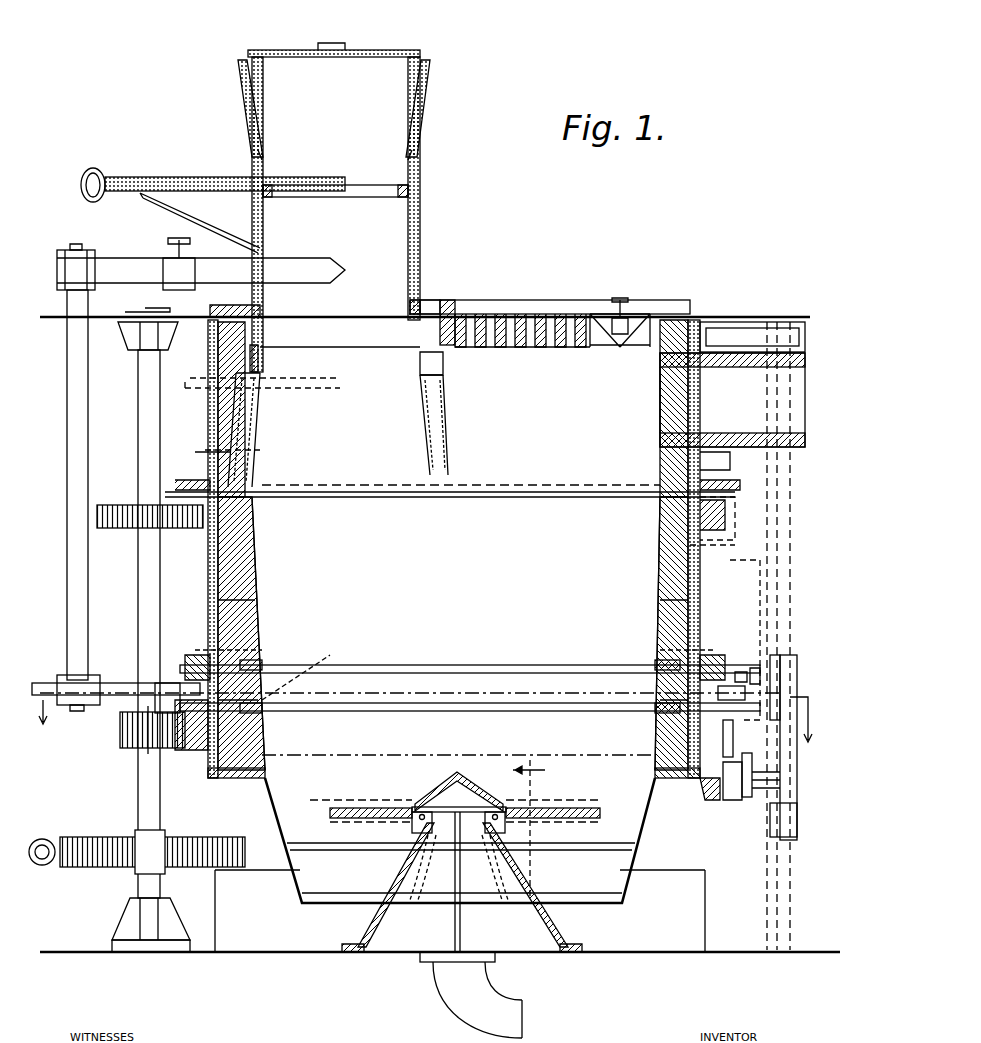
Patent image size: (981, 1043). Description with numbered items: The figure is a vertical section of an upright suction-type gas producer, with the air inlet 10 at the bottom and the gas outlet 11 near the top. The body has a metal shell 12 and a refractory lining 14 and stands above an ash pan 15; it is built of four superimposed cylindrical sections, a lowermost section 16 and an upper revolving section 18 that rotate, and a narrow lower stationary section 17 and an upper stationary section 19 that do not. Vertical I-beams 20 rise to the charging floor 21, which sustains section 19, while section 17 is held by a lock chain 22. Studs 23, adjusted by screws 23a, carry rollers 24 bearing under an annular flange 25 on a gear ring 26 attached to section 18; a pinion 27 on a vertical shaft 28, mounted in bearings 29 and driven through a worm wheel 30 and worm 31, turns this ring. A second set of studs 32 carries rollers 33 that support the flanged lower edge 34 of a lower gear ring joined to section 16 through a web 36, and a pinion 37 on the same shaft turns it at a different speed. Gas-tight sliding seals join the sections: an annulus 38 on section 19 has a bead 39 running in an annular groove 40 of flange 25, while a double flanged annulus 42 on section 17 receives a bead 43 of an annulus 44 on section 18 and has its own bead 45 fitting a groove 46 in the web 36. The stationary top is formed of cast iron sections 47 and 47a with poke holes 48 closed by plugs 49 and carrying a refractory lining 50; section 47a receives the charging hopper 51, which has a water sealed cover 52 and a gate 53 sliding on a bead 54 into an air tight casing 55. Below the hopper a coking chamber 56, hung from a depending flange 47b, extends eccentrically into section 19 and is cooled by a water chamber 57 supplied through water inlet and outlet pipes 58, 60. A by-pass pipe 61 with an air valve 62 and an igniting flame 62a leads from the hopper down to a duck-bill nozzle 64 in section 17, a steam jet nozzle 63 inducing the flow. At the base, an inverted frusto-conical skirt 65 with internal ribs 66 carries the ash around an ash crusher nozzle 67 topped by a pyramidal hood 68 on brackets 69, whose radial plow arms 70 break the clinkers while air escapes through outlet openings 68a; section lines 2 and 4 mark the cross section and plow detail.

The section line 2— 2 is at (422, 731).
The section line 4— 4 is at (532, 815).
The air inlet 10 is at (471, 995).
The gas outlet 11 is at (732, 400).
The metal shell 12 is at (210, 577).
The refractory lining 14 is at (265, 560).
The ash pan 15 is at (460, 911).
The lowermost section 16 is at (458, 739).
The lower stationary section 17 is at (410, 688).
The upper revolving section 18 is at (461, 620).
The upper stationary section 19 is at (545, 415).
The vertical I-beams 20 is at (790, 655).
The charging floor 21 is at (732, 322).
The lock chain 22 is at (748, 672).
The studs 23 is at (745, 640).
The screws 23a is at (715, 475).
The rollers 24 is at (660, 548).
The annular flange 25 is at (715, 488).
The gear ring 26 is at (660, 522).
The pinion 27 is at (122, 530).
The vertical shaft 28 is at (138, 585).
The bearings 29 is at (136, 352).
The worm wheel 30 is at (95, 868).
The worm 31 is at (42, 838).
The studs 32 is at (760, 812).
The rollers 33 is at (725, 785).
The flanged lower edge 34 is at (700, 790).
The web 36 is at (212, 778).
The pinion 37 is at (125, 735).
The annulus 38 is at (660, 470).
The bead 39 is at (725, 420).
The annular groove 40 is at (252, 514).
The double flanged annulus 42 is at (262, 665).
The bead 43 is at (192, 655).
The annulus 44 is at (210, 650).
The bead 45 is at (290, 718).
The groove 46 is at (160, 683).
The top sections 47 is at (548, 302).
The top section 47a is at (438, 302).
The depending flange 47b is at (410, 335).
The poke holes 48 is at (620, 350).
The plugs 49 is at (640, 300).
The refractory lining 50 is at (500, 347).
The charging hopper 51 is at (420, 220).
The water sealed cover 52 is at (383, 50).
The gate 53 is at (345, 185).
The bead 54 is at (401, 200).
The air tight casing 55 is at (183, 177).
The coking chamber 56 is at (338, 430).
The water chamber 57 is at (446, 412).
The water inlet pipe 58 is at (205, 458).
The water outlet pipe 60 is at (187, 384).
The by-pass pipe 61 is at (285, 258).
The air valve 62 is at (170, 258).
The flame 62a is at (135, 296).
The steam jet nozzle 63 is at (50, 676).
The duck-bill nozzle 64 is at (302, 663).
The inverted frusto-conical skirt 65 is at (283, 885).
The horizontal internal ribs 66 is at (330, 850).
The ash crusher nozzle 67 is at (462, 887).
The pyramidal hood 68 is at (465, 772).
The air outlet openings 68a is at (415, 810).
The brackets 69 is at (459, 882).
The plow arms 70 is at (370, 808).